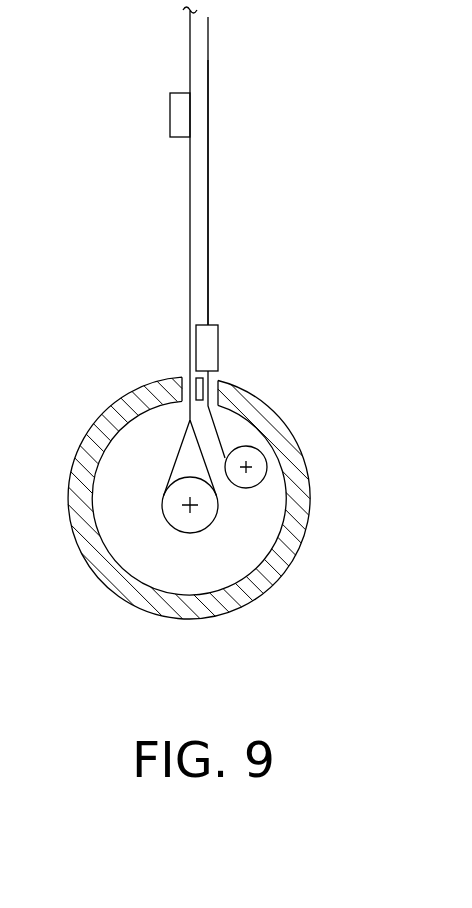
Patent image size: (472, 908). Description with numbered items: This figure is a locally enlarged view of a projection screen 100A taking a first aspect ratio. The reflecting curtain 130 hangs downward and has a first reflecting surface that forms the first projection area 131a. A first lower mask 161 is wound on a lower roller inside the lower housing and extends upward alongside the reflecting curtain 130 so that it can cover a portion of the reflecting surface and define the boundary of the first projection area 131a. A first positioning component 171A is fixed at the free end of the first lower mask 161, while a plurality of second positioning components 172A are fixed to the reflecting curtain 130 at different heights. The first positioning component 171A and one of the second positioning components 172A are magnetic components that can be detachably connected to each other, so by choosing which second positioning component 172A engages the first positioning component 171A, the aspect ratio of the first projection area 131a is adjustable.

The projection screen 100A is at (297, 624).
The reflecting curtain 130 is at (190, 169).
The first projection area 131a is at (208, 194).
The first lower mask 161 is at (217, 435).
The first positioning component 171A is at (207, 347).
The second positioning components 172A is at (175, 120).